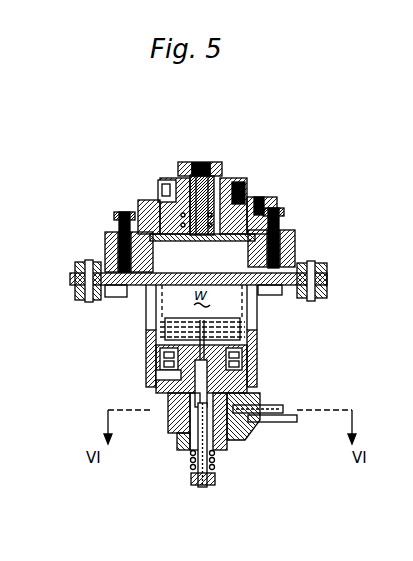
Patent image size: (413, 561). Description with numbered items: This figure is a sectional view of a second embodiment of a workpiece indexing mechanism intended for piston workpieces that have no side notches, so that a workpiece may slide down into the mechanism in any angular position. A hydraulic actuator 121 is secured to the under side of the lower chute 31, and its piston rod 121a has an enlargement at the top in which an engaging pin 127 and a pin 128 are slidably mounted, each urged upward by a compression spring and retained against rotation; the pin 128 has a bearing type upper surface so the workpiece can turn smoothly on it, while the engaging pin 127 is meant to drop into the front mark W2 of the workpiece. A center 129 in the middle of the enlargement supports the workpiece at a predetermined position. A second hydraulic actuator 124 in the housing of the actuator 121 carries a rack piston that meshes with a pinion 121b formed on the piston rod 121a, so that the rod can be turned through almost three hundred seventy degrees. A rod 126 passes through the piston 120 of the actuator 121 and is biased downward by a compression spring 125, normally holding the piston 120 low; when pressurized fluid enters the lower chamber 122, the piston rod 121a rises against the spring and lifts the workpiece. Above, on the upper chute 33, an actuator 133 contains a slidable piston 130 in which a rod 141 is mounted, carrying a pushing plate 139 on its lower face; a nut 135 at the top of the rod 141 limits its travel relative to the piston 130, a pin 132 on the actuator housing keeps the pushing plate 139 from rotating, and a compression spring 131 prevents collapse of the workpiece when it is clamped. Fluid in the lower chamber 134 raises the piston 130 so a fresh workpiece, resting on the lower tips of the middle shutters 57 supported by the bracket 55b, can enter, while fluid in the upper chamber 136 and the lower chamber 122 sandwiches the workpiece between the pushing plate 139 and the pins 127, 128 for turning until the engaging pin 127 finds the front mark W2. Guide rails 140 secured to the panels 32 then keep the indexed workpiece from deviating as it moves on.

The nut 135 is at (192, 162).
The rod 141 is at (214, 163).
The upper chamber 136 is at (165, 180).
The actuator 133 is at (162, 200).
The lower chamber 134 is at (145, 212).
The piston 130 is at (234, 178).
The compression spring 131 is at (250, 200).
The pin 132 is at (270, 215).
The pushing plate 139 is at (118, 215).
The guide rails 140 is at (108, 262).
The bracket 55b is at (108, 248).
The upper chute 33 is at (320, 274).
The middle shutters 57 is at (74, 286).
The lower chute 31 is at (146, 372).
The panels 32 is at (257, 335).
The center 129 is at (165, 326).
The front mark W2 is at (162, 352).
The engaging pin 127 is at (162, 360).
The pin 128 is at (240, 355).
The piston rod 121a is at (183, 400).
The pinion 121b is at (186, 422).
The piston 120 is at (195, 432).
The hydraulic actuator 121 is at (228, 430).
The hydraulic actuator 124 is at (250, 425).
The compression spring 125 is at (205, 484).
The rod 126 is at (195, 456).
The lower chamber 122 is at (207, 476).